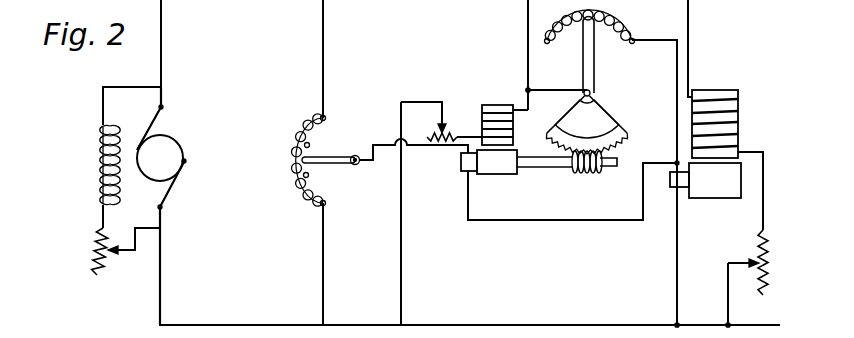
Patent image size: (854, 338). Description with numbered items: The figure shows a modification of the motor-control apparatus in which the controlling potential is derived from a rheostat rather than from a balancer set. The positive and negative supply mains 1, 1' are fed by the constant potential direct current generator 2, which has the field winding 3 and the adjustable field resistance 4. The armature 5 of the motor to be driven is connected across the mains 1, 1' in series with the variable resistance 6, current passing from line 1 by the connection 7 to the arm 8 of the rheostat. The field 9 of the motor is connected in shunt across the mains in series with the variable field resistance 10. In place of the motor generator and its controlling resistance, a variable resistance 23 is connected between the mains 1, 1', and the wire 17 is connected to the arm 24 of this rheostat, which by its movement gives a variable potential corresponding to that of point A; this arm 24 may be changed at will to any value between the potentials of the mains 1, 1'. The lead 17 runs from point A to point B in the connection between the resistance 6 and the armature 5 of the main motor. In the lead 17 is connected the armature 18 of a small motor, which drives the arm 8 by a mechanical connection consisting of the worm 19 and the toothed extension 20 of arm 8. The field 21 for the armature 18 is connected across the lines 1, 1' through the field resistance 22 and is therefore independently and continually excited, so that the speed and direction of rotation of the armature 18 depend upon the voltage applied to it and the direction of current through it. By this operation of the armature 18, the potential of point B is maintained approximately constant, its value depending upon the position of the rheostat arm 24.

The positive supply main 1 is at (469, 163).
The negative supply main 1' is at (469, 163).
The direct current generator 2 is at (161, 206).
The field winding 3 is at (122, 157).
The adjustable field resistance 4 is at (114, 251).
The armature 5 is at (732, 171).
The variable resistance 6 is at (615, 25).
The connection 7 is at (527, 56).
The arm 8 is at (595, 63).
The field 9 is at (749, 113).
The variable field resistance 10 is at (756, 278).
The lead 17 is at (441, 151).
The armature of small motor 18 is at (539, 162).
The worm 19 is at (586, 175).
The toothed extension 20 is at (585, 152).
The field 21 is at (505, 116).
The field resistance 22 is at (457, 127).
The variable resistance 23 is at (292, 150).
The arm 24 is at (385, 163).
The point A is at (409, 163).
The point B is at (672, 163).